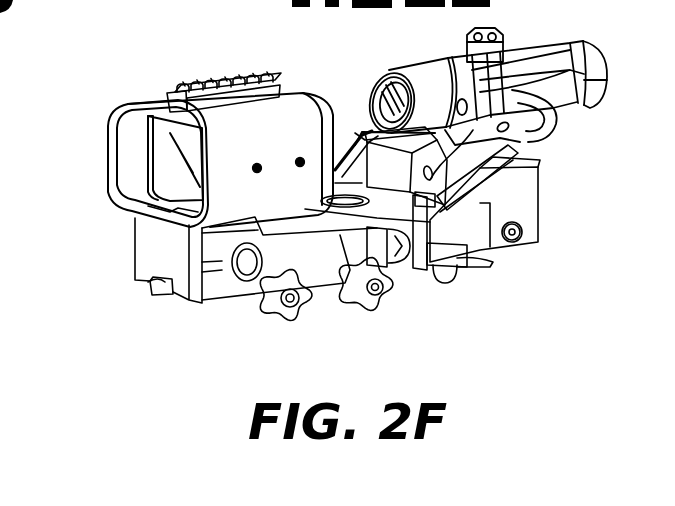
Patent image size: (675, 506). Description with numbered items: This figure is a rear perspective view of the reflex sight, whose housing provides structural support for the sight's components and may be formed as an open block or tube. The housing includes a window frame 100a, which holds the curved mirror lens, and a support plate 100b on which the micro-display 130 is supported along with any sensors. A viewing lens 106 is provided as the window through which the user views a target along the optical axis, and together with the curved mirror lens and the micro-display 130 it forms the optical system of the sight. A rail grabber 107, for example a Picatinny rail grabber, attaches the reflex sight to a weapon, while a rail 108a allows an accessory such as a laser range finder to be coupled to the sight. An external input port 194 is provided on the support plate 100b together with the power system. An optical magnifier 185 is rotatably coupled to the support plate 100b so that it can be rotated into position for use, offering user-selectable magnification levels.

The window frame 100a is at (108, 160).
The support plate 100b is at (178, 250).
The viewing lens 106 is at (158, 177).
The rail grabber 107 is at (286, 322).
The rail 108a is at (185, 88).
The micro-display 130 is at (395, 173).
The optical magnifier 185 is at (590, 42).
The external input port 194 is at (515, 240).